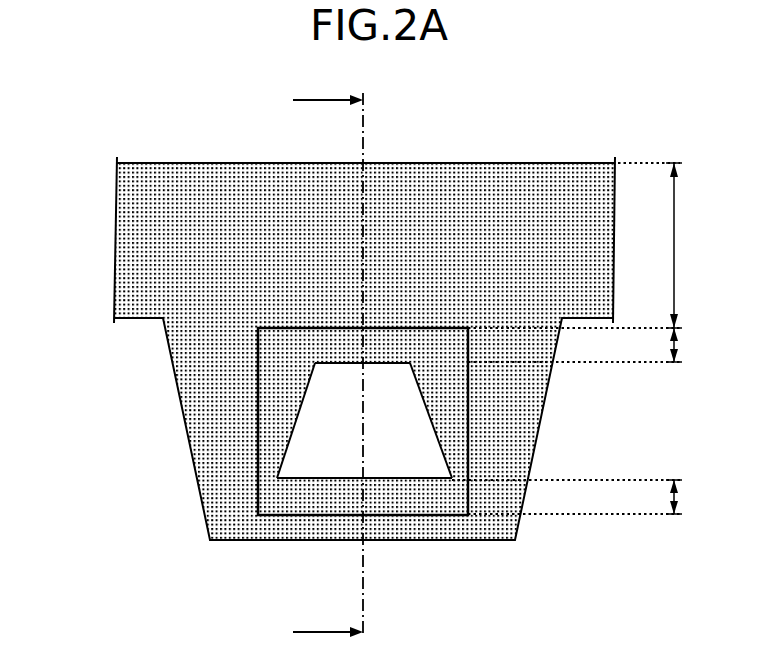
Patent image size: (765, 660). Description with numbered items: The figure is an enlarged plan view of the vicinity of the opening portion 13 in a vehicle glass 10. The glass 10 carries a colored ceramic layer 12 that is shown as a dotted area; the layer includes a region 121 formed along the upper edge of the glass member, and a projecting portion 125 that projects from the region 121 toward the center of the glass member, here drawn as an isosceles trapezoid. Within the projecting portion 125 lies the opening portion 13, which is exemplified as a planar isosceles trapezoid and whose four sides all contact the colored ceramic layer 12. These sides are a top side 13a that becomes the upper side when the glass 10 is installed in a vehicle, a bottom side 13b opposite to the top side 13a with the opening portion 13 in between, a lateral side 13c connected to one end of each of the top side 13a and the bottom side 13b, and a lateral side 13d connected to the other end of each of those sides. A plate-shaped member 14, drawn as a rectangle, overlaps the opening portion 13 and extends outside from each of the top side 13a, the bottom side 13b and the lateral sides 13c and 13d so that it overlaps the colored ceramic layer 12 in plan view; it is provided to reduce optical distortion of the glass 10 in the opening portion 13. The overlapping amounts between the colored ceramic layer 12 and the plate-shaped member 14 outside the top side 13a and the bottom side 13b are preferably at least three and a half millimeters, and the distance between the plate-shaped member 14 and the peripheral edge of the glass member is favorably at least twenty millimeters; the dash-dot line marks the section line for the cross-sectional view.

The glass 10 is at (67, 106).
The colored ceramic layer 12 is at (337, 318).
The region 121 is at (107, 163).
The projecting portion 125 is at (306, 429).
The opening portion 13 is at (364, 482).
The top side 13a is at (325, 363).
The bottom side 13b is at (410, 478).
The lateral side 13c is at (290, 442).
The lateral side 13d is at (415, 385).
The plate-shaped member 14 is at (433, 498).